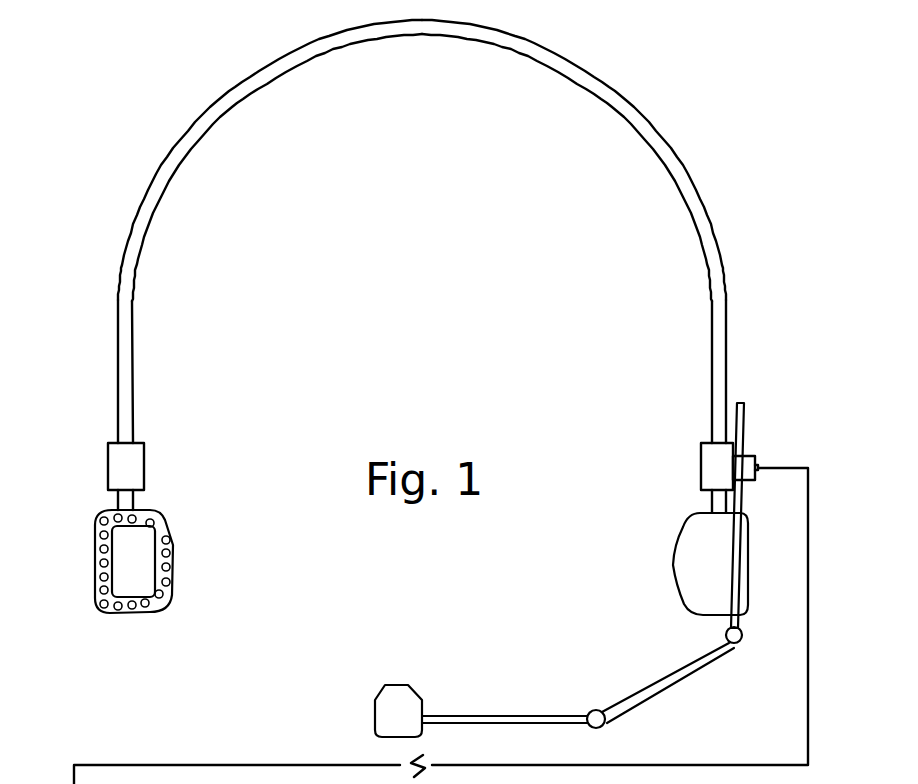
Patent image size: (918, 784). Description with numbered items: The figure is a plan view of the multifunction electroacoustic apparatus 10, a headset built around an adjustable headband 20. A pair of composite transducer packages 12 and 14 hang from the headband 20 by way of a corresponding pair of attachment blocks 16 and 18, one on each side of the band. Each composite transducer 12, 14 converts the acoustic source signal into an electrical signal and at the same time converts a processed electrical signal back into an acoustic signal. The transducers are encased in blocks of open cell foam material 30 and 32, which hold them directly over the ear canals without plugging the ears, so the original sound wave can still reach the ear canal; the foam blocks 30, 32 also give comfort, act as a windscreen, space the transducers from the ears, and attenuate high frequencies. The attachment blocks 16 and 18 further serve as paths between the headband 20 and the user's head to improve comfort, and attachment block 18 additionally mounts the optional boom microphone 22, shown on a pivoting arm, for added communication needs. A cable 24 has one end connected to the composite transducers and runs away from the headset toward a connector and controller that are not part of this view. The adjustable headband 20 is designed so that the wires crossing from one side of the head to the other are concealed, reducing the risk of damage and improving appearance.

The electroacoustic apparatus 10 is at (463, 204).
The composite transducer package 12 is at (140, 583).
The composite transducer package 14 is at (713, 577).
The attachment block 16 is at (145, 480).
The attachment block 18 is at (701, 479).
The adjustable headband 20 is at (590, 72).
The boom microphone 22 is at (408, 683).
The cable 24 is at (808, 668).
The open cell foam block 30 is at (95, 553).
The open cell foam block 32 is at (675, 550).